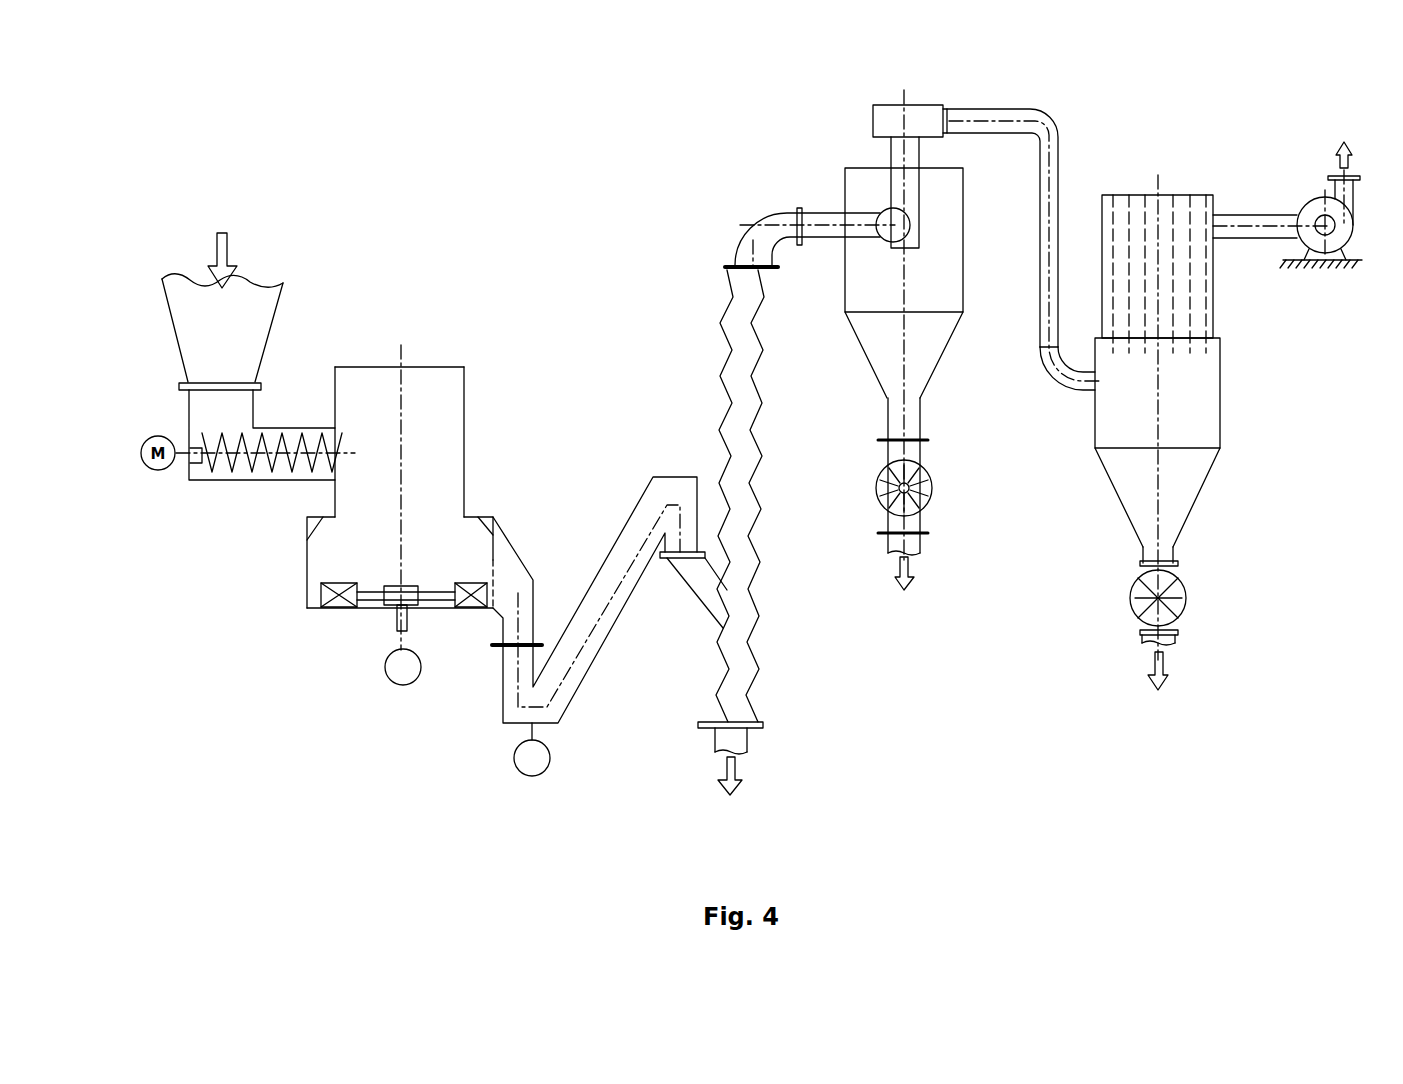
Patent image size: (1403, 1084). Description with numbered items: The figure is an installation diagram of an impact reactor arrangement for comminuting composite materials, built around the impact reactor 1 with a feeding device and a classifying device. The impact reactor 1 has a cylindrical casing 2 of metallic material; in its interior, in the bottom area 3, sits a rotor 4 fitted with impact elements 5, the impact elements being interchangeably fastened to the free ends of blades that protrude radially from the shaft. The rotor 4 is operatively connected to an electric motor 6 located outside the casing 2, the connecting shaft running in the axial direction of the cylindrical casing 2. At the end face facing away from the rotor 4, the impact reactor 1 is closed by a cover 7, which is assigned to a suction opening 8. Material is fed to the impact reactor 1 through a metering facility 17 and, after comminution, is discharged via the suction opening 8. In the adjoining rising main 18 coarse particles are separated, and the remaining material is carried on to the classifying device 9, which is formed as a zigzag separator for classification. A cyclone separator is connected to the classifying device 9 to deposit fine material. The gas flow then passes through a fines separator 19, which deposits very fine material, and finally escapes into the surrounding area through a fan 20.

The impact reactor 1 is at (385, 408).
The cylindrical casing 2 is at (465, 410).
The bottom area 3 is at (360, 608).
The rotor 4 is at (436, 603).
The impact elements 5 is at (470, 594).
The electric motor 6 is at (403, 683).
The cover 7 is at (432, 365).
The suction opening 8 is at (495, 567).
The classifying device 9 is at (888, 270).
The metering facility 17 is at (233, 312).
The rising main 18 is at (585, 643).
The fines separator 19 is at (1180, 477).
The fan 20 is at (1322, 223).